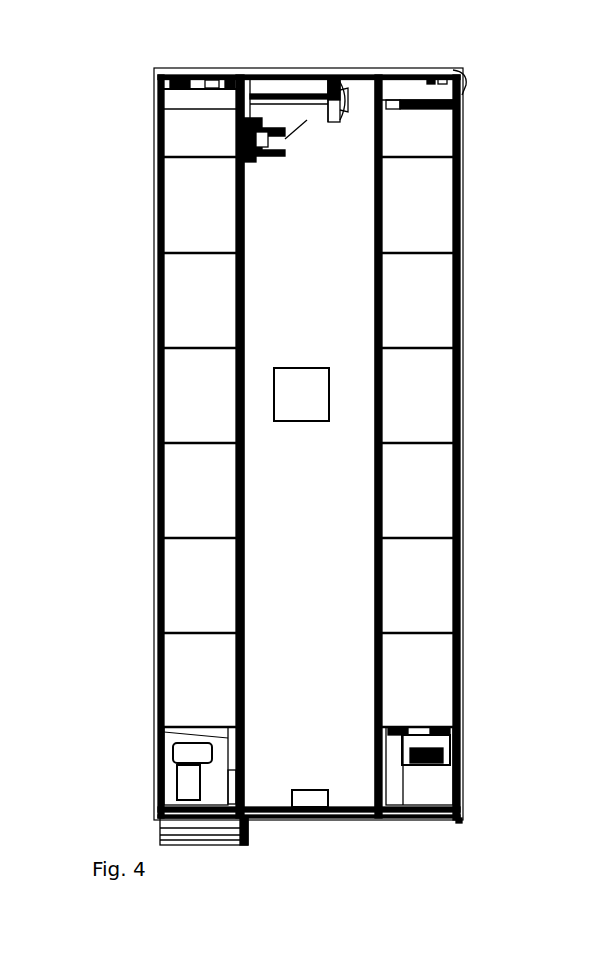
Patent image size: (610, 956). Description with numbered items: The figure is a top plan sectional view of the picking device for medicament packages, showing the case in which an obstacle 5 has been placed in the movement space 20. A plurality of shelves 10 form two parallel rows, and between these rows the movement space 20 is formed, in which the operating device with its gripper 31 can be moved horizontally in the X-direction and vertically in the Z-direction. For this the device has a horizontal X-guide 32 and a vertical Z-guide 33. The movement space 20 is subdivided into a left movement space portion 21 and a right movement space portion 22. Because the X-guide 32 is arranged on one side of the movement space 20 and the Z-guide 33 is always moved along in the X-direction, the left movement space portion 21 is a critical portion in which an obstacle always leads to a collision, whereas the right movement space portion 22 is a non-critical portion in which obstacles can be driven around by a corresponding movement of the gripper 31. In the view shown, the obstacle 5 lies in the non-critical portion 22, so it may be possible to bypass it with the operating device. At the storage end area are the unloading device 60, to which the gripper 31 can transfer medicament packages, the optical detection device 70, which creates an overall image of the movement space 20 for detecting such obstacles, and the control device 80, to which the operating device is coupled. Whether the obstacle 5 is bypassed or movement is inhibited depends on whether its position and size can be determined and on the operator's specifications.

The obstacle 5 is at (310, 402).
The shelves 10 is at (415, 212).
The movement space 20 is at (318, 447).
The left movement space portion 21 is at (255, 333).
The right movement space portion 22 is at (290, 268).
The gripper 31 is at (306, 89).
The X-guide 32 is at (236, 213).
The Z-guide 33 is at (244, 118).
The unloading device 60 is at (195, 790).
The optical detection device 70 is at (313, 800).
The control device 80 is at (418, 793).